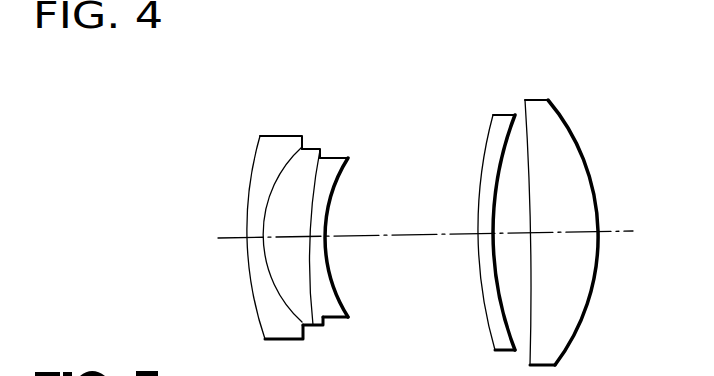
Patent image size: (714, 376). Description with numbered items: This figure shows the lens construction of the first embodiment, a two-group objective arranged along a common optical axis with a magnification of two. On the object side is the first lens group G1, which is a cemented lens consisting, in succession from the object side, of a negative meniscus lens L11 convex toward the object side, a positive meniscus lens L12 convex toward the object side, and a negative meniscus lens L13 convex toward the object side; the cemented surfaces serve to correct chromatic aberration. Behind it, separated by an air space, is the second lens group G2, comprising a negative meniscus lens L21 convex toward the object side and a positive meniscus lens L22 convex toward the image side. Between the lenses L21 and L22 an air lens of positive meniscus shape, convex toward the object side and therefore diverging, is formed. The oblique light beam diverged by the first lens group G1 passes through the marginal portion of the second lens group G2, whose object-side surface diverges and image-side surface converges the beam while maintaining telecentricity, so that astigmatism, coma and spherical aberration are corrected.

The first lens group G1 is at (377, 50).
The second lens group G2 is at (568, 50).
The negative meniscus lens L11 is at (275, 135).
The positive meniscus lens L12 is at (310, 148).
The negative meniscus lens L13 is at (338, 157).
The negative meniscus lens L21 is at (502, 114).
The positive meniscus lens L22 is at (540, 99).